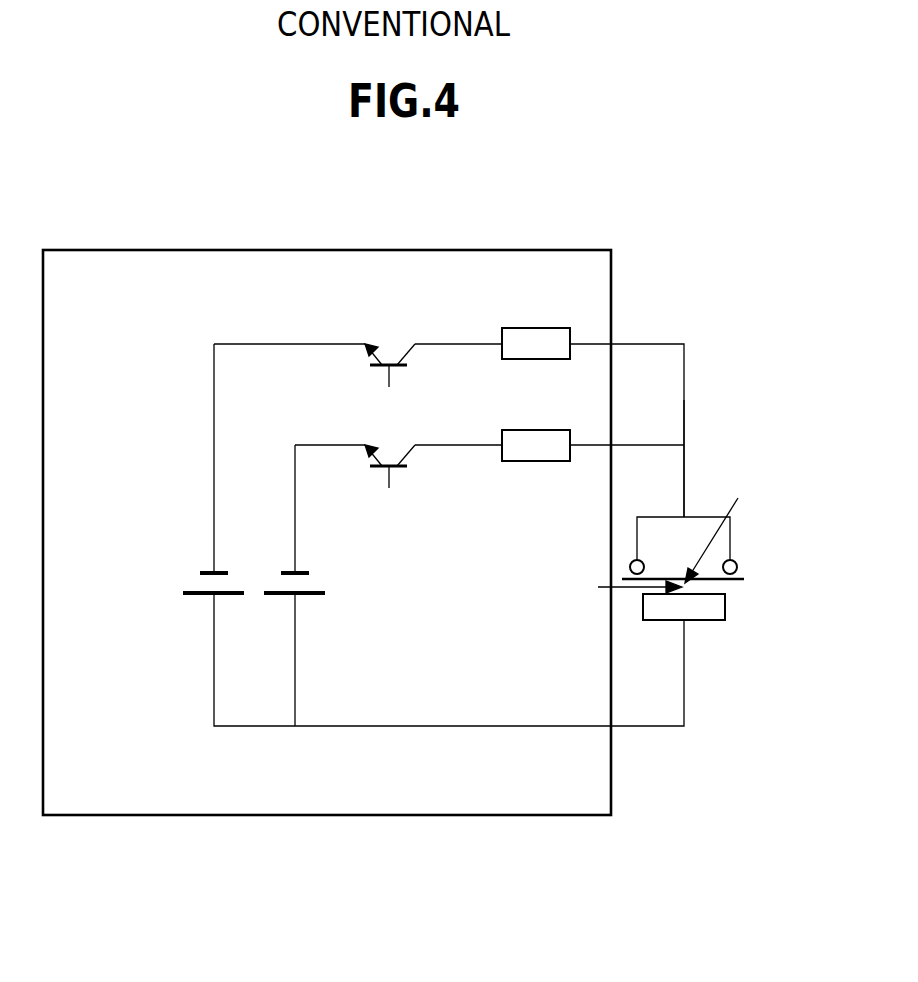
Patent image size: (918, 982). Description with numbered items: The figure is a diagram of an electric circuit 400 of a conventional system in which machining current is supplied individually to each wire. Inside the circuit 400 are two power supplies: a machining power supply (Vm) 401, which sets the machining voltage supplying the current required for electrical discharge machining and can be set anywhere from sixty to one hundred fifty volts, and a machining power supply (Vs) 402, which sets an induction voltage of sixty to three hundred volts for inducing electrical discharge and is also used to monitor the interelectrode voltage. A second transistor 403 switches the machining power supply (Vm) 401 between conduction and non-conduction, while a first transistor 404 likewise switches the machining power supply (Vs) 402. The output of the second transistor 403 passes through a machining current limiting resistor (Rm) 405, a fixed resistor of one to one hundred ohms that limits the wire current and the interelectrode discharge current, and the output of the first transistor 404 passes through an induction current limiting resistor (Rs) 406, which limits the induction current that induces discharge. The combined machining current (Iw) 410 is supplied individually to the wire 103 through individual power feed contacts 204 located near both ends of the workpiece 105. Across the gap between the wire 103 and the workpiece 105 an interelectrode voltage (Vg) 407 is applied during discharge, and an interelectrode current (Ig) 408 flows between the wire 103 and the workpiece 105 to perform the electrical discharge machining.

The electric circuit 400 is at (333, 250).
The machining power supply (Vm) 401 is at (322, 583).
The machining power supply (Vs) 402 is at (190, 582).
The transistor (Tr2) 403 is at (390, 442).
The transistor (Tr1) 404 is at (390, 340).
The machining current limiting resistor (Rm) 405 is at (536, 430).
The induction current limiting resistor (Rs) 406 is at (536, 328).
The interelectrode voltage (Vg) 407 is at (619, 596).
The interelectrode current (Ig) 408 is at (737, 530).
The machining current (Iw) 410 is at (684, 458).
The individual power feed contact 204 is at (738, 561).
The wire 103 is at (730, 582).
The workpiece 105 is at (712, 621).